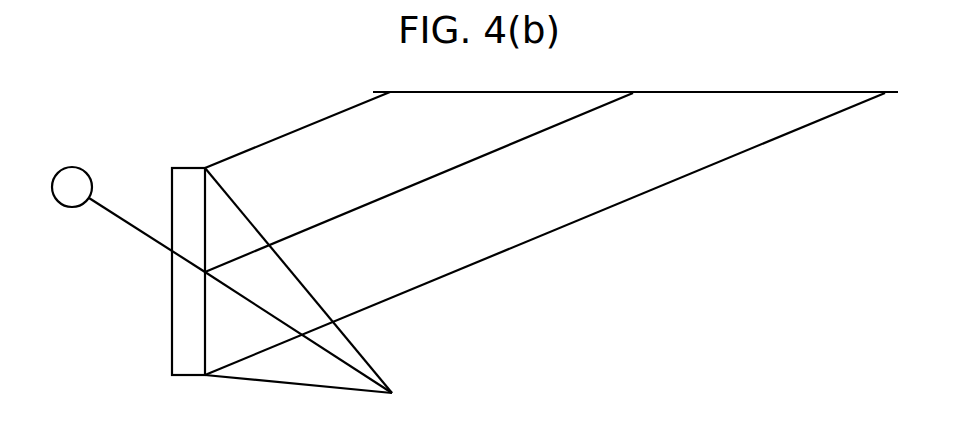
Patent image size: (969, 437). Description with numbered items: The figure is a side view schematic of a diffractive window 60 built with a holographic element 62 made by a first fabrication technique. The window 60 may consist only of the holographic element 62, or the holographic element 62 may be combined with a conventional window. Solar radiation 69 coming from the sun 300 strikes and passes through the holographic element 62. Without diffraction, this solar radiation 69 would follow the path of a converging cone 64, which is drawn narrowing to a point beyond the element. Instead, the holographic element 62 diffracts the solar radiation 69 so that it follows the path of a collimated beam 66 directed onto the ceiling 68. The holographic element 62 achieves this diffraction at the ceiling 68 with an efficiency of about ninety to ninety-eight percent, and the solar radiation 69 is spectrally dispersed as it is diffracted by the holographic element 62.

The window 60 is at (187, 377).
The holographic element 62 is at (197, 167).
The converging cone 64 is at (360, 365).
The collimated beam 66 is at (547, 223).
The ceiling 68 is at (667, 95).
The solar radiation 69 is at (130, 228).
The sun 300 is at (72, 167).